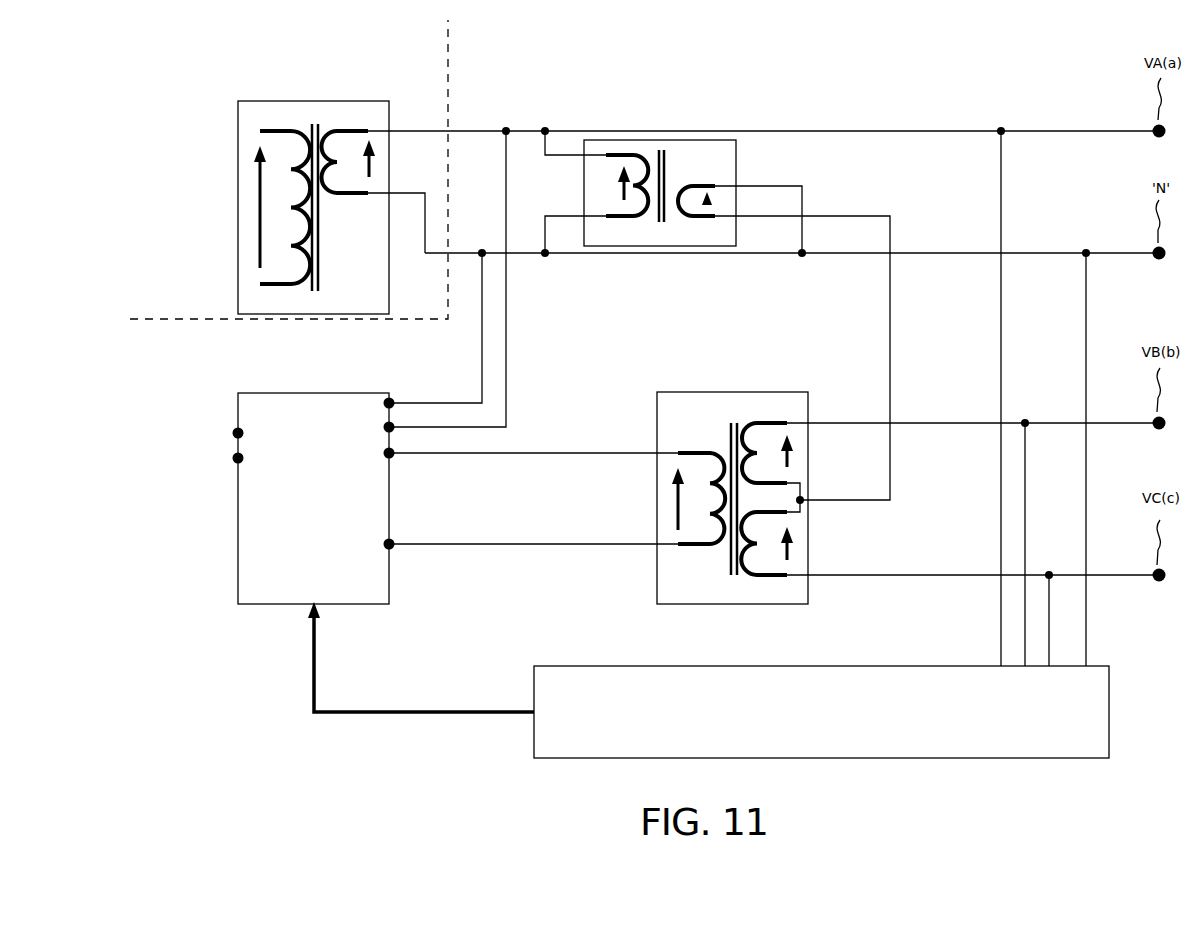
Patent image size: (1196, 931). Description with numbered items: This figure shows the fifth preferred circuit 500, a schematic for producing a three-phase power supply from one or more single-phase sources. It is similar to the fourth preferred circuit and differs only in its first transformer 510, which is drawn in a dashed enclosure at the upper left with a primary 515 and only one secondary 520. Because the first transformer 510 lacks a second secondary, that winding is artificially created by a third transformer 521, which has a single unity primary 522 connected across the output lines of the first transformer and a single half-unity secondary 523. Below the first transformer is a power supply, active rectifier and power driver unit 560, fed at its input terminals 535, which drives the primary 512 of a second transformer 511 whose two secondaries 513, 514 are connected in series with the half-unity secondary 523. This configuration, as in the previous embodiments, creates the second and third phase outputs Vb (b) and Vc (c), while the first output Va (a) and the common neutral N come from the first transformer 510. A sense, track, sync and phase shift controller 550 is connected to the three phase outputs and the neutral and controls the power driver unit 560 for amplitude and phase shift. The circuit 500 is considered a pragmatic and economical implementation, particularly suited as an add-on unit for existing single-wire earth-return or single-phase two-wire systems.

The fifth preferred circuit 500 is at (874, 97).
The first transformer 510 is at (314, 101).
The primary 515 is at (292, 192).
The secondary 520 is at (338, 145).
The third transformer 521 is at (660, 140).
The primary 522 is at (634, 170).
The secondary 523 is at (684, 196).
The output transformer 511 is at (733, 392).
The primary winding of output transformer 512 is at (712, 470).
The first secondary winding of output transformer 513 is at (767, 440).
The second secondary winding of output transformer 514 is at (757, 555).
The input terminals of power supply 535 is at (232, 441).
The power supply / active rectifier / power driver 560 is at (393, 540).
The controller 550 is at (927, 666).